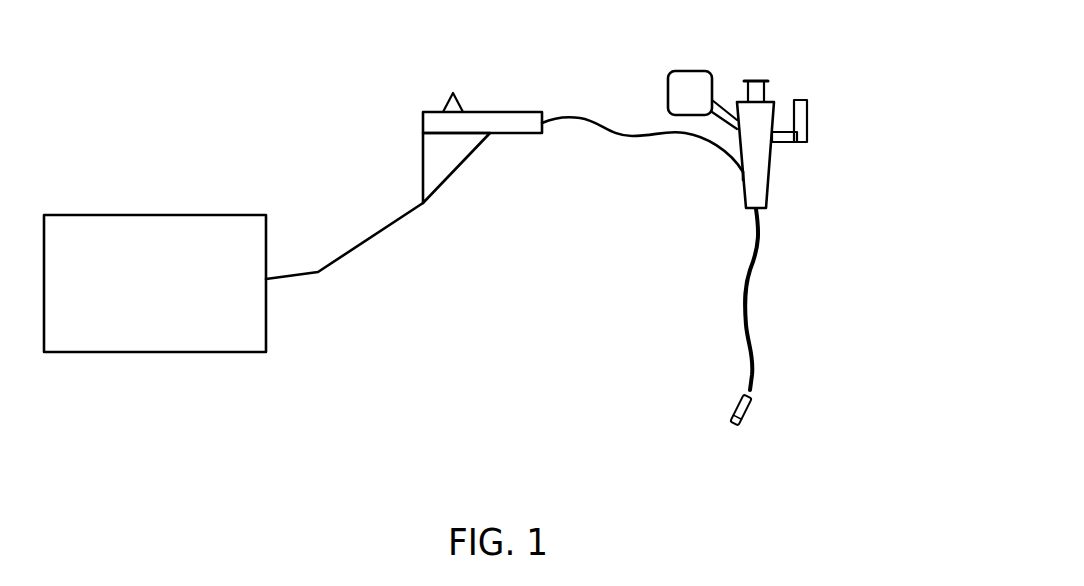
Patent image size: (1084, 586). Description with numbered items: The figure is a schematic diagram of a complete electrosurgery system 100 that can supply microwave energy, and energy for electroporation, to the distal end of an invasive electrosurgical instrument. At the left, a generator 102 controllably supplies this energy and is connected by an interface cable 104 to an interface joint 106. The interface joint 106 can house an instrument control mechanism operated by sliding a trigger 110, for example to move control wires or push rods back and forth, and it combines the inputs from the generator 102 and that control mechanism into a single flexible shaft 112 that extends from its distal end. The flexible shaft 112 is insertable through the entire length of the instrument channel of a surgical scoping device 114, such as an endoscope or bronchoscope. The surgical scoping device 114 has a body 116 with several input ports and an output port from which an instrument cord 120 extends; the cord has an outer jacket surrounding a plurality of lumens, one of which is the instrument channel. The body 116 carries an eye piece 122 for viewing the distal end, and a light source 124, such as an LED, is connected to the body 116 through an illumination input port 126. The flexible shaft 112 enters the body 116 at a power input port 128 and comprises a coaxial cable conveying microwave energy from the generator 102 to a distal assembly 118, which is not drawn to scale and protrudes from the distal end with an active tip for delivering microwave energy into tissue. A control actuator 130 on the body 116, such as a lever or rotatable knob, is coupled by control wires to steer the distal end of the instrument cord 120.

The electrosurgery system 100 is at (195, 422).
The generator 102 is at (182, 296).
The interface cable 104 is at (358, 243).
The interface joint 106 is at (458, 173).
The trigger 110 is at (446, 110).
The flexible shaft 112 is at (640, 136).
The surgical scoping device 114 is at (857, 88).
The body 116 is at (760, 160).
The distal assembly 118 is at (750, 410).
The instrument cord 120 is at (742, 307).
The eye piece 122 is at (757, 90).
The light source 124 is at (690, 80).
The illumination input port 126 is at (718, 102).
The power input port 128 is at (743, 178).
The control actuator 130 is at (808, 119).